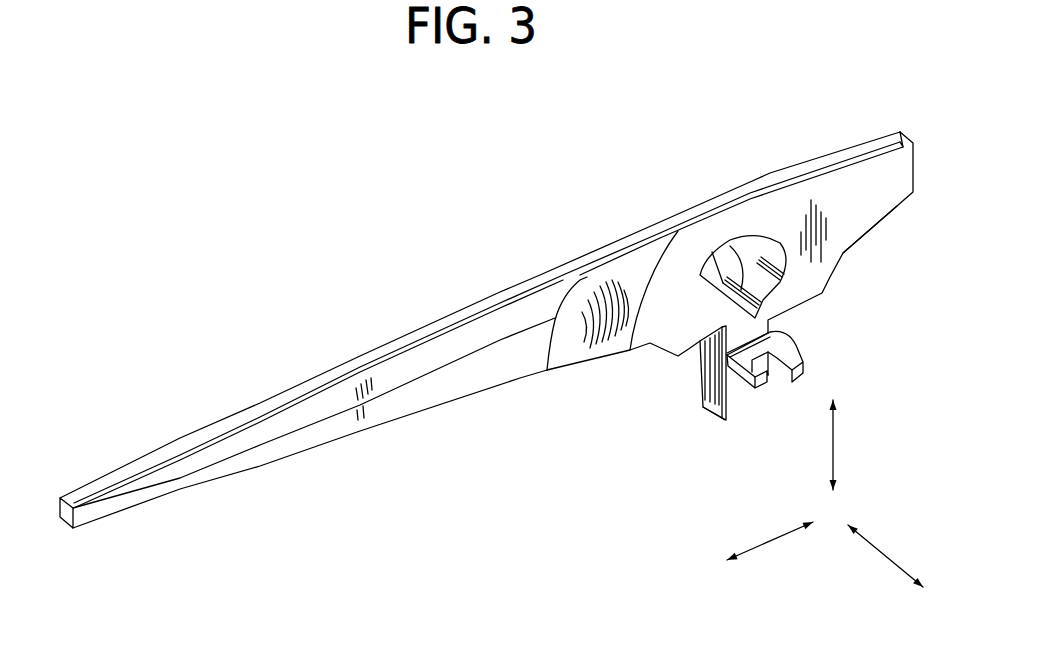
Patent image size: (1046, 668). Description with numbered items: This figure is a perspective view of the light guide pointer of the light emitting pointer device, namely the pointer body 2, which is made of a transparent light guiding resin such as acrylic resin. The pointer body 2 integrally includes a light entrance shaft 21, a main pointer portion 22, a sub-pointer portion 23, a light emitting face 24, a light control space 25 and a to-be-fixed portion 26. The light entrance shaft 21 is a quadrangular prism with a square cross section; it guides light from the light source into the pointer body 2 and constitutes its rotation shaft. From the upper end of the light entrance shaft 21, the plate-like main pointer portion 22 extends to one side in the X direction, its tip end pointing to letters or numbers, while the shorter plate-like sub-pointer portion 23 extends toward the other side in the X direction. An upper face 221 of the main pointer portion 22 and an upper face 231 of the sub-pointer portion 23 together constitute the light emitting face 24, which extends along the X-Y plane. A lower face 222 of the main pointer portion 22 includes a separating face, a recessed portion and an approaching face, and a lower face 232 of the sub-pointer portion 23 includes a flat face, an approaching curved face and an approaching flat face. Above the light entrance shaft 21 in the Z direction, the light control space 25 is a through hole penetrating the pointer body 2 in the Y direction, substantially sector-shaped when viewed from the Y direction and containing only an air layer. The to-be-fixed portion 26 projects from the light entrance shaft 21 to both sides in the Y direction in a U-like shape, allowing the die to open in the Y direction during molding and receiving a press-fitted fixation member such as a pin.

The pointer body 2 is at (440, 157).
The light entrance shaft 21 is at (738, 404).
The main pointer portion 22 is at (483, 333).
The upper face 221 is at (333, 372).
The lower face 222 is at (442, 407).
The sub-pointer portion 23 is at (877, 180).
The upper face 231 is at (818, 160).
The lower face 232 is at (867, 233).
The light emitting face 24 is at (620, 242).
The light control space 25 is at (732, 258).
The to-be-fixed portion 26 is at (805, 355).